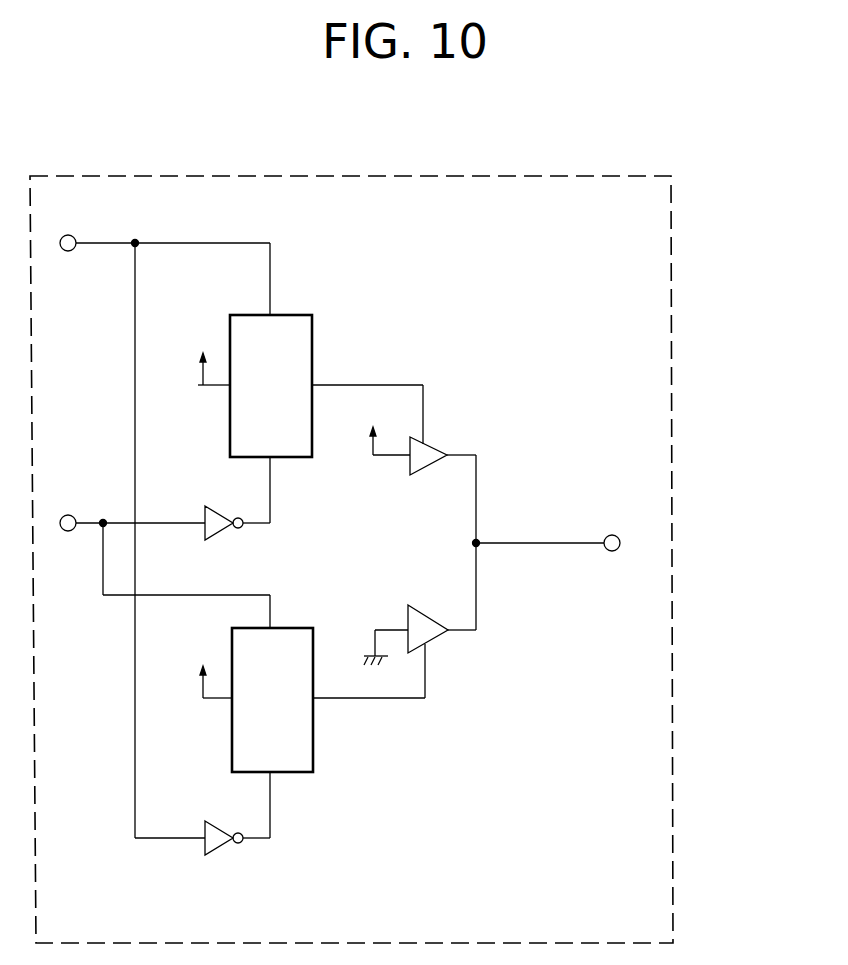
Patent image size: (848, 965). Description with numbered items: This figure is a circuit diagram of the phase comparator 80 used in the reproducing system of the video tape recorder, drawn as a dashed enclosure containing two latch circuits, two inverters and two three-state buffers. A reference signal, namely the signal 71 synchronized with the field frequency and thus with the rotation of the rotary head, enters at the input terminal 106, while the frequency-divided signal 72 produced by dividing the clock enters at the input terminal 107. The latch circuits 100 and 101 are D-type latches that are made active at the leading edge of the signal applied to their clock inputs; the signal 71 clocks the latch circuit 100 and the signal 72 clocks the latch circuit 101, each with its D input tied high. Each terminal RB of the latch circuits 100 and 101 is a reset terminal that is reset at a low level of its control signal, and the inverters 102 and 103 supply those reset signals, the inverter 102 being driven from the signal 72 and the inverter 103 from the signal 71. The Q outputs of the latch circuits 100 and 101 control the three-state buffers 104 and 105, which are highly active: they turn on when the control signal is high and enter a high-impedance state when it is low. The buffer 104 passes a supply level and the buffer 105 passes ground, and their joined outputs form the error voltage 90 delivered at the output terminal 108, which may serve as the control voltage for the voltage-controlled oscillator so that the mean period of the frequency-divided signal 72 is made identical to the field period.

The synchronized signal 71 is at (202, 243).
The frequency-divided signal 72 is at (167, 523).
The phase comparator 80 is at (672, 577).
The error voltage 90 is at (527, 545).
The latch circuit 100 is at (313, 337).
The latch circuit 101 is at (314, 657).
The inverter 102 is at (218, 537).
The inverter 103 is at (218, 852).
The three-state buffer 104 is at (424, 477).
The three-state buffer 105 is at (435, 648).
The input terminal for a reference signal 106 is at (68, 252).
The input terminal for a frequency-dividing signal 107 is at (68, 531).
The output terminal for an error voltage 108 is at (612, 551).